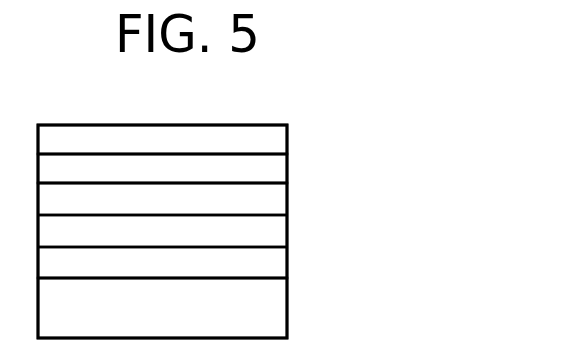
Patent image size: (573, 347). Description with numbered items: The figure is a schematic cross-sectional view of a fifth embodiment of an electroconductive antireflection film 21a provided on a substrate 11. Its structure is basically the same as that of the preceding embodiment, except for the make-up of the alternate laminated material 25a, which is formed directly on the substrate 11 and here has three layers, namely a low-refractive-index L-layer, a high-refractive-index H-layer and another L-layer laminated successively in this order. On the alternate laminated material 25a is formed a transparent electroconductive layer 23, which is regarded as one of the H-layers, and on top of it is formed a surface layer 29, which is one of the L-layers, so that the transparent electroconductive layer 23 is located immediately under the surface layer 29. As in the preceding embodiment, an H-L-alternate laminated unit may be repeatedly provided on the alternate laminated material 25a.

The electroconductive antireflection film 21a is at (453, 103).
The surface layer 29 is at (288, 138).
The transparent electroconductive layer 23 is at (288, 166).
The alternate laminated material 25a is at (288, 202).
The substrate 11 is at (288, 312).